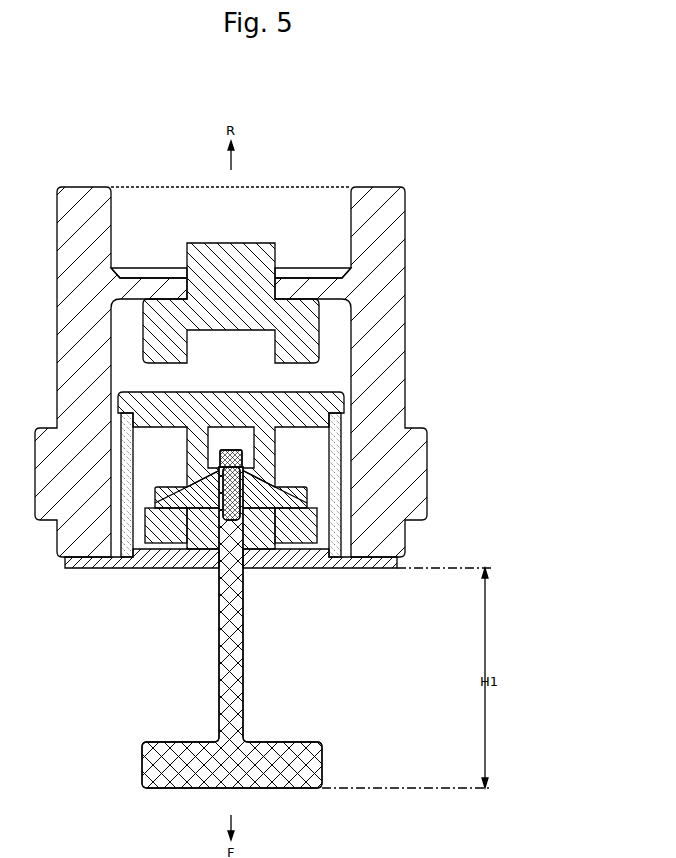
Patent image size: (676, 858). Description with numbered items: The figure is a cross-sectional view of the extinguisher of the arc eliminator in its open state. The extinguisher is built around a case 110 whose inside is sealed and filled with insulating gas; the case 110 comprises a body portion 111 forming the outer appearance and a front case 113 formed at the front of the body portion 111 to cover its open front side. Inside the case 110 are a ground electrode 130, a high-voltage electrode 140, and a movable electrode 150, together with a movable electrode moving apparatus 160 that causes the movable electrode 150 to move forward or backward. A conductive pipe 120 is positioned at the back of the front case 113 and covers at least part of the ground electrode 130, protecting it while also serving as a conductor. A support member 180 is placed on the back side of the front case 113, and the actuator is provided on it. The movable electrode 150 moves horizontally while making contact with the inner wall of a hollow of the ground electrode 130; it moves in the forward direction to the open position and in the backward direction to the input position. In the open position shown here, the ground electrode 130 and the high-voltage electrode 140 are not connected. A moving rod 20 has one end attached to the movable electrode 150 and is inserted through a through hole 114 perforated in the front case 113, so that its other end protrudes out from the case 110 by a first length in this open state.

The case 110 is at (240, 363).
The body portion 111 is at (405, 283).
The front case 113 is at (290, 557).
The through hole 114 is at (243, 567).
The pipe 120 is at (335, 557).
The ground electrode 130 is at (332, 405).
The high-voltage electrode 140 is at (249, 241).
The movable electrode 150 is at (263, 454).
The movable electrode moving apparatus 160 is at (170, 544).
The support member 180 is at (205, 545).
The moving rod 20 is at (263, 781).